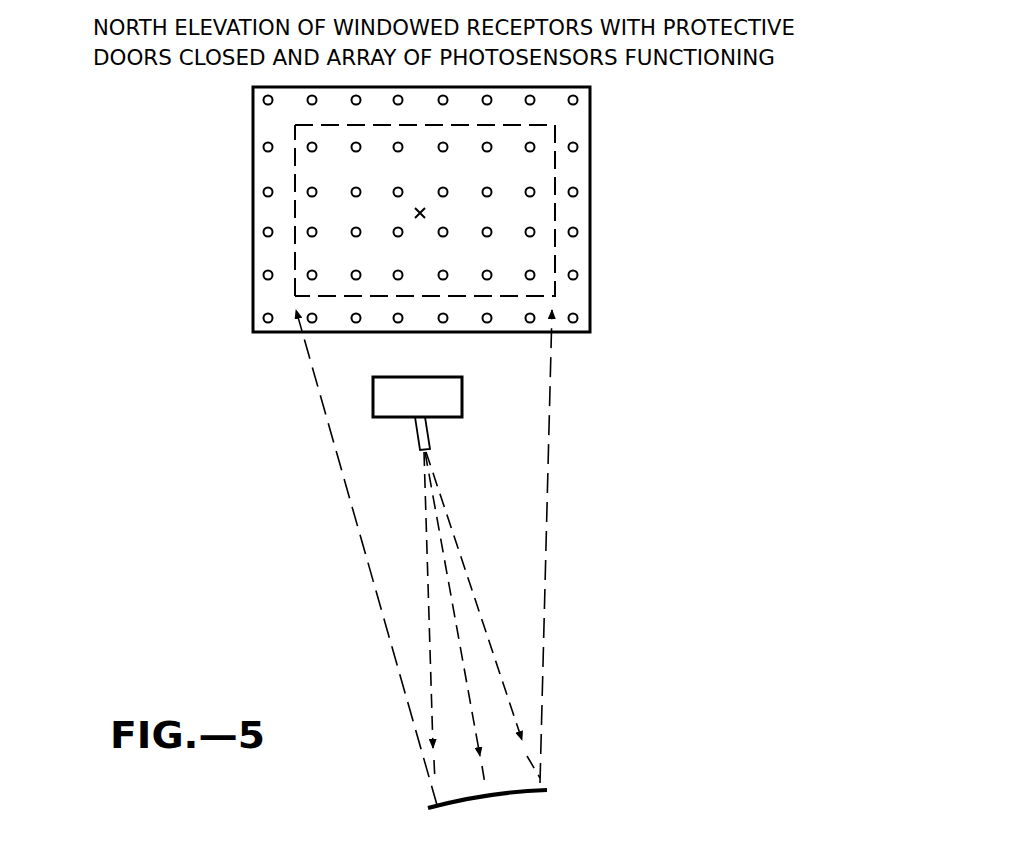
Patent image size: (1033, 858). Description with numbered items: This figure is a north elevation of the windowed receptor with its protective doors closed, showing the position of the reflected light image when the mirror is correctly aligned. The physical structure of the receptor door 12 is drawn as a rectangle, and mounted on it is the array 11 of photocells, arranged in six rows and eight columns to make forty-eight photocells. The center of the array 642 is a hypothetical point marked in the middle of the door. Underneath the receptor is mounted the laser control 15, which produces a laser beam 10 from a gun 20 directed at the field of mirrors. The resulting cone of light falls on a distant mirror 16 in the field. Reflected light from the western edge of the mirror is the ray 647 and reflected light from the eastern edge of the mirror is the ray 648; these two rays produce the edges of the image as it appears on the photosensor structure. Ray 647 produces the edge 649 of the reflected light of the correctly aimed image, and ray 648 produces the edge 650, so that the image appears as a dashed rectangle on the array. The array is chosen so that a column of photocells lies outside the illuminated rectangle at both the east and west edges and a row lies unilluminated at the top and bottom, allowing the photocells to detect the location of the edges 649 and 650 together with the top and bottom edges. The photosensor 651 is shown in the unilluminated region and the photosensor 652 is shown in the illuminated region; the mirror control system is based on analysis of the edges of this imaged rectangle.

The receptor door 12 is at (253, 133).
The array of photocells 11 is at (266, 189).
The center of the array 642 is at (415, 213).
The edge of the reflected light 650 is at (295, 280).
The edge of the reflected light of the image 649 is at (562, 133).
The photosensor 651 is at (579, 234).
The photosensor 652 is at (537, 279).
The laser control 15 is at (371, 403).
The gun 20 is at (410, 435).
The laser beam 10 is at (439, 577).
The ray 648 is at (385, 632).
The ray 647 is at (543, 603).
The distant mirror 16 is at (443, 810).